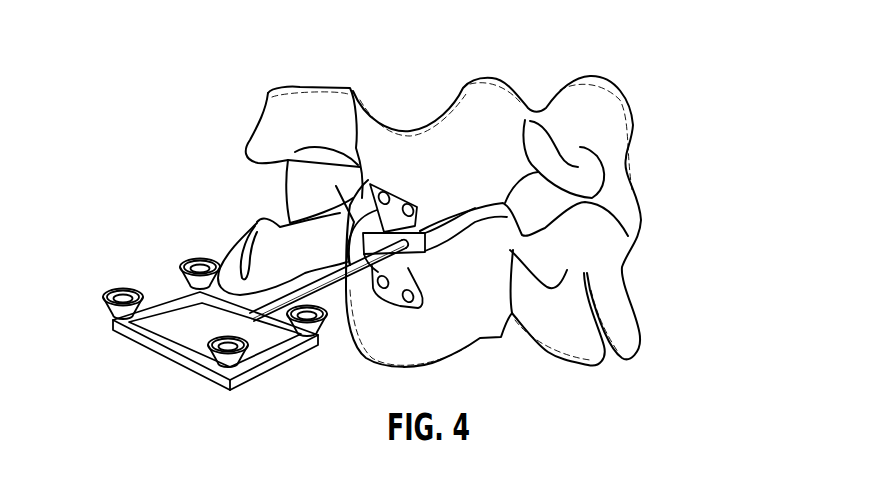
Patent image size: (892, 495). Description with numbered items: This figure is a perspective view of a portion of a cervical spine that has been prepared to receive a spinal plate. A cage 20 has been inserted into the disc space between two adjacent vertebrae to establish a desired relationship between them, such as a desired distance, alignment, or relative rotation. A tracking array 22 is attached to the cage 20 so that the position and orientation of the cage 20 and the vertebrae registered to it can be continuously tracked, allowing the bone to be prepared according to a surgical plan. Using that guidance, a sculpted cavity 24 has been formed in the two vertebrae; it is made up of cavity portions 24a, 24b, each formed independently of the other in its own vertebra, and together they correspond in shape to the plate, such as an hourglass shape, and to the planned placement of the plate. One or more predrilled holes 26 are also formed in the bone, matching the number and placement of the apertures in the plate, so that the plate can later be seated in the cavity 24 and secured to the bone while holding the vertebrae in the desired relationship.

The cage 20 is at (456, 212).
The tracking array 22 is at (160, 344).
The sculpted cavity 24 is at (418, 277).
The cavity portion 24a is at (370, 234).
The cavity portion 24b is at (371, 302).
The predrilled hole 26 is at (385, 192).